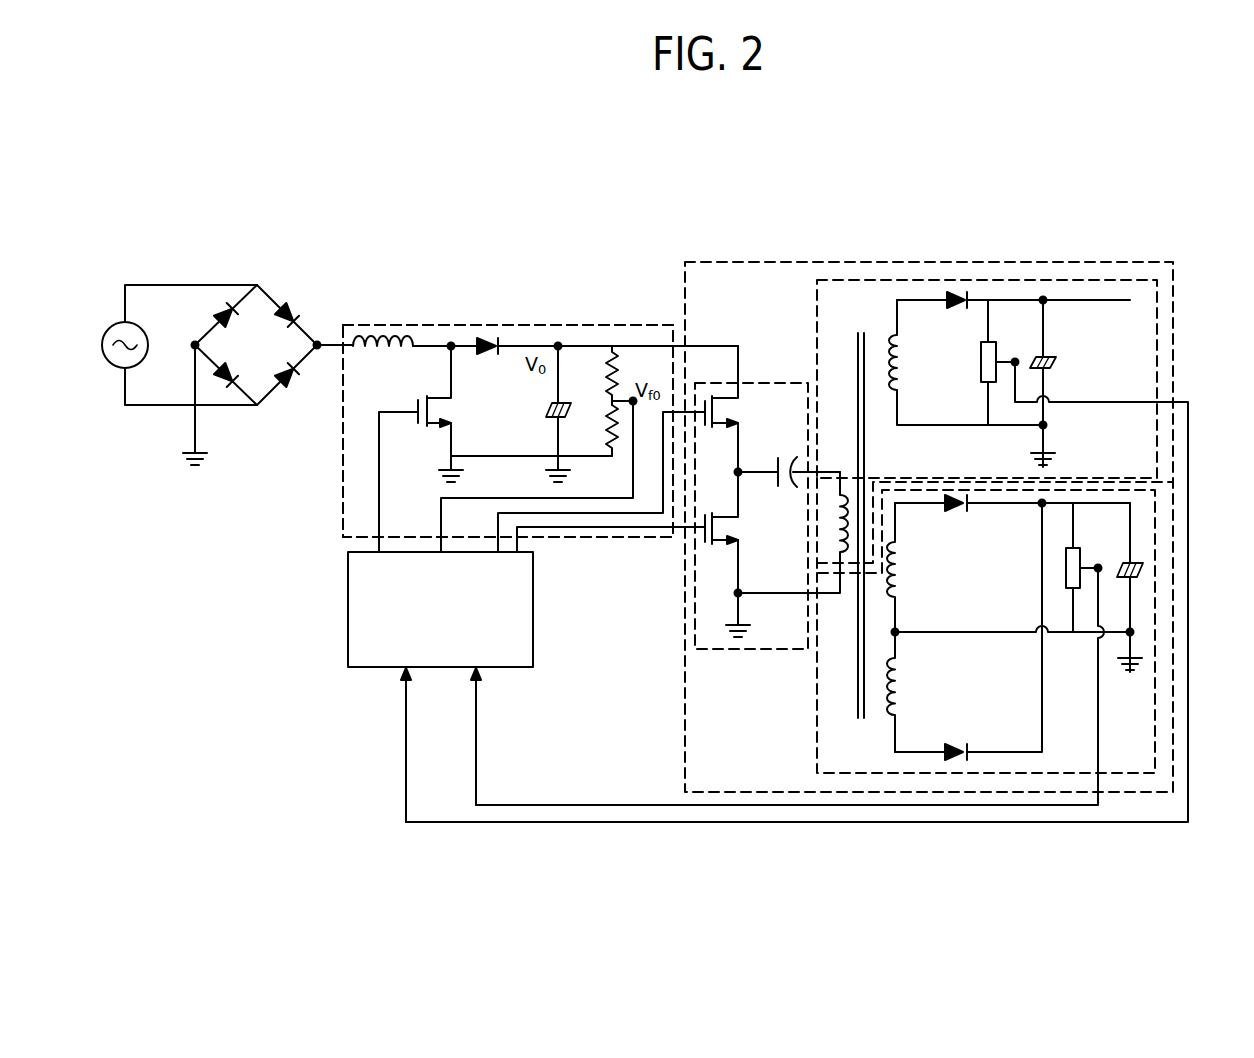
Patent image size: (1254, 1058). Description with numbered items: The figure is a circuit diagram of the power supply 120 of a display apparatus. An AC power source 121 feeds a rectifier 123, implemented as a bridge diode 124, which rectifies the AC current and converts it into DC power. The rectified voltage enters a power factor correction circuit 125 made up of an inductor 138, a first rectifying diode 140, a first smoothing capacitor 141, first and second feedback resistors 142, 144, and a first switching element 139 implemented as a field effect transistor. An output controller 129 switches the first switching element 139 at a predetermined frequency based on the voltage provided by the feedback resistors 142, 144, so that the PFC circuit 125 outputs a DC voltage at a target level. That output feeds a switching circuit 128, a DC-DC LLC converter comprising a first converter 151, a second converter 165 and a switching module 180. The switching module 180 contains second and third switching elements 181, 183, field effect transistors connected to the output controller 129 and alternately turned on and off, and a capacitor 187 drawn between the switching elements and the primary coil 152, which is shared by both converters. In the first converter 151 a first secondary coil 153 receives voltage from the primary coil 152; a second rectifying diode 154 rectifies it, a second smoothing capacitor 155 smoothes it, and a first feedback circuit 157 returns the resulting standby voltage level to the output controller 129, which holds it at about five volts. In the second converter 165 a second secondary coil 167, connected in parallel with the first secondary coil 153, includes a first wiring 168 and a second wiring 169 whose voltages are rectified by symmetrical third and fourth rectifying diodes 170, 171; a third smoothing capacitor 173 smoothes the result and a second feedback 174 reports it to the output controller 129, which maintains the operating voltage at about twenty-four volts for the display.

The power supply 120 is at (512, 194).
The AC power source 121 is at (106, 286).
The rectifier 123 is at (268, 345).
The bridge diode 124 is at (247, 292).
The power factor correction circuit 125 is at (433, 325).
The switching circuit 128 is at (733, 262).
The output controller 129 is at (348, 610).
The inductor 138 is at (381, 334).
The first switching element 139 is at (418, 398).
The first rectifying diode 140 is at (483, 338).
The first smoothing capacitor 141 is at (546, 407).
The first feedback resistor 142 is at (603, 370).
The second feedback resistor 144 is at (615, 420).
The first converter 151 is at (1008, 347).
The primary coil 152 is at (835, 543).
The first secondary coil 153 is at (887, 357).
The second rectifying diode 154 is at (950, 287).
The second smoothing capacitor 155 is at (1057, 363).
The first feedback circuit 157 is at (981, 363).
The second converter 165 is at (975, 625).
The second secondary coil 167 is at (800, 627).
The first wiring 168 is at (890, 590).
The second wiring 169 is at (890, 693).
The third rectifying diode 170 is at (958, 513).
The fourth rectifying diode 171 is at (958, 740).
The third smoothing capacitor 173 is at (1143, 568).
The second feedback 174 is at (1066, 568).
The switching module 180 is at (714, 497).
The second switching element 181 is at (720, 406).
The third switching element 183 is at (720, 527).
The capacitor 187 is at (787, 483).